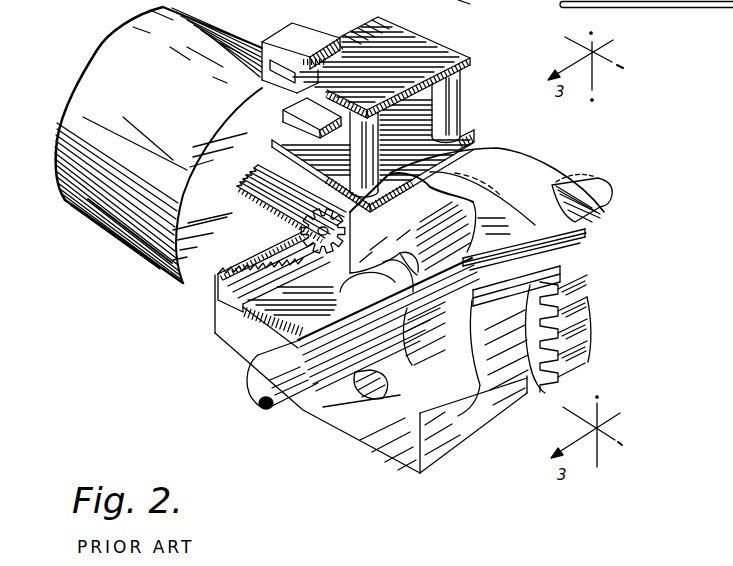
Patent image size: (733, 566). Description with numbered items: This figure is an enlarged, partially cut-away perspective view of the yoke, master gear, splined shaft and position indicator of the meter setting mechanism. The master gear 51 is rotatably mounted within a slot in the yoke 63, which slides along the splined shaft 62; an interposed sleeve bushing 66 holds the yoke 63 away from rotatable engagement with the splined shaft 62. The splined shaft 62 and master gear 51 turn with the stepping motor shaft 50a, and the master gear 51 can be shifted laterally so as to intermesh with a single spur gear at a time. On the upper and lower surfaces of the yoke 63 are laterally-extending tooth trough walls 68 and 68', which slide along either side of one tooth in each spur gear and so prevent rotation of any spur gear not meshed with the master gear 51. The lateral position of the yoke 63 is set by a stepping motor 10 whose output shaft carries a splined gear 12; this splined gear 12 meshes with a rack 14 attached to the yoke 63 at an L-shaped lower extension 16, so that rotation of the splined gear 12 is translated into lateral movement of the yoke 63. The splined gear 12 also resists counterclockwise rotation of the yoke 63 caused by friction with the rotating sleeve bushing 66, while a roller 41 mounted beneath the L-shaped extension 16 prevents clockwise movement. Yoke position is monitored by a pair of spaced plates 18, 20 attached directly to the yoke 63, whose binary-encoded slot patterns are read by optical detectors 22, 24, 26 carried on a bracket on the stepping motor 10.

The stepping motor 10 is at (97, 201).
The splined gear 12 is at (234, 175).
The rack 14 is at (217, 275).
The L-shaped lower extension 16 is at (231, 331).
The plate 18 is at (468, 48).
The plate 20 is at (400, 110).
The optical detector 22 is at (263, 39).
The optical detector 24 is at (298, 22).
The optical detector 26 is at (297, 126).
The roller 41 is at (470, 4).
The stepping motor shaft 50a is at (614, 200).
The master gear 51 is at (587, 298).
The splined shaft 62 is at (308, 401).
The yoke 63 is at (520, 163).
The sleeve bushing 66 is at (409, 370).
The upper tooth trough wall 68 is at (584, 334).
The lower tooth trough wall 68' is at (547, 252).